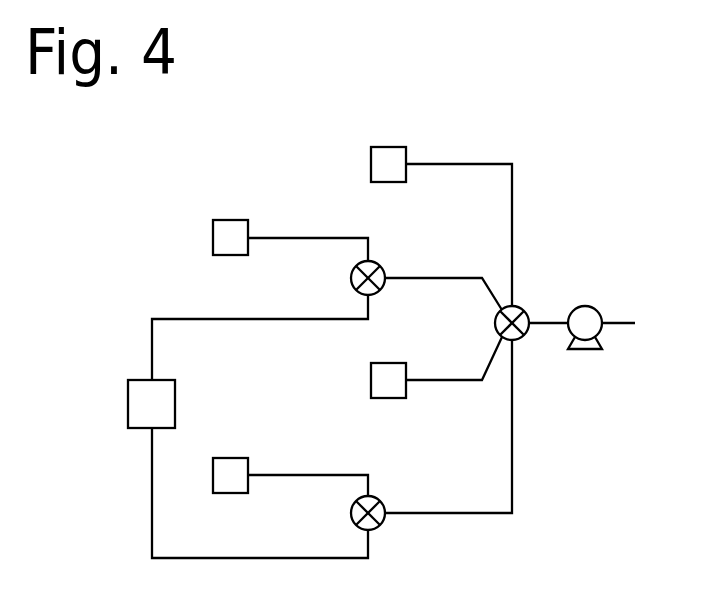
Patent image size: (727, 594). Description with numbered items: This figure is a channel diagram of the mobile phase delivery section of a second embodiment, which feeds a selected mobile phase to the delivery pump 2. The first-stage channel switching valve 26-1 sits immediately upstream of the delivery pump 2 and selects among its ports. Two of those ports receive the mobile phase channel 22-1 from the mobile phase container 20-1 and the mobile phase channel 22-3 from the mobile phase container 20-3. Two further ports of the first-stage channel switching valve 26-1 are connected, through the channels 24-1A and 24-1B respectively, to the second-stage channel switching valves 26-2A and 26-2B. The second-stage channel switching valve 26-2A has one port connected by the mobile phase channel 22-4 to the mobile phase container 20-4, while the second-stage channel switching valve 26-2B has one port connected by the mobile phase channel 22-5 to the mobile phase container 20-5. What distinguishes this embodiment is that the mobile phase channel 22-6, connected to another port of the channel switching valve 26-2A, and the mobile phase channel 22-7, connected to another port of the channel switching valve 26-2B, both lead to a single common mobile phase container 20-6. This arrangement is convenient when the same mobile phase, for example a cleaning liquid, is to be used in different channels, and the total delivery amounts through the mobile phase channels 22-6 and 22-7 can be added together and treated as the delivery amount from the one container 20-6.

The delivery pump 2 is at (593, 305).
The mobile phase container 20-1 is at (399, 147).
The mobile phase container 20-3 is at (376, 398).
The mobile phase container 20-4 is at (232, 218).
The mobile phase container 20-5 is at (232, 457).
The common mobile phase container 20-6 is at (127, 407).
The mobile phase channel 22-1 is at (475, 162).
The mobile phase channel 22-3 is at (423, 382).
The mobile phase channel 22-4 is at (287, 237).
The mobile phase channel 22-5 is at (276, 475).
The mobile phase channel 22-6 is at (245, 317).
The mobile phase channel 22-7 is at (247, 558).
The channel 24-1A is at (419, 279).
The channel 24-1B is at (420, 512).
The first-stage channel switching valve 26-1 is at (522, 307).
The second-stage channel switching valve 26-2A is at (375, 260).
The second-stage channel switching valve 26-2B is at (375, 495).